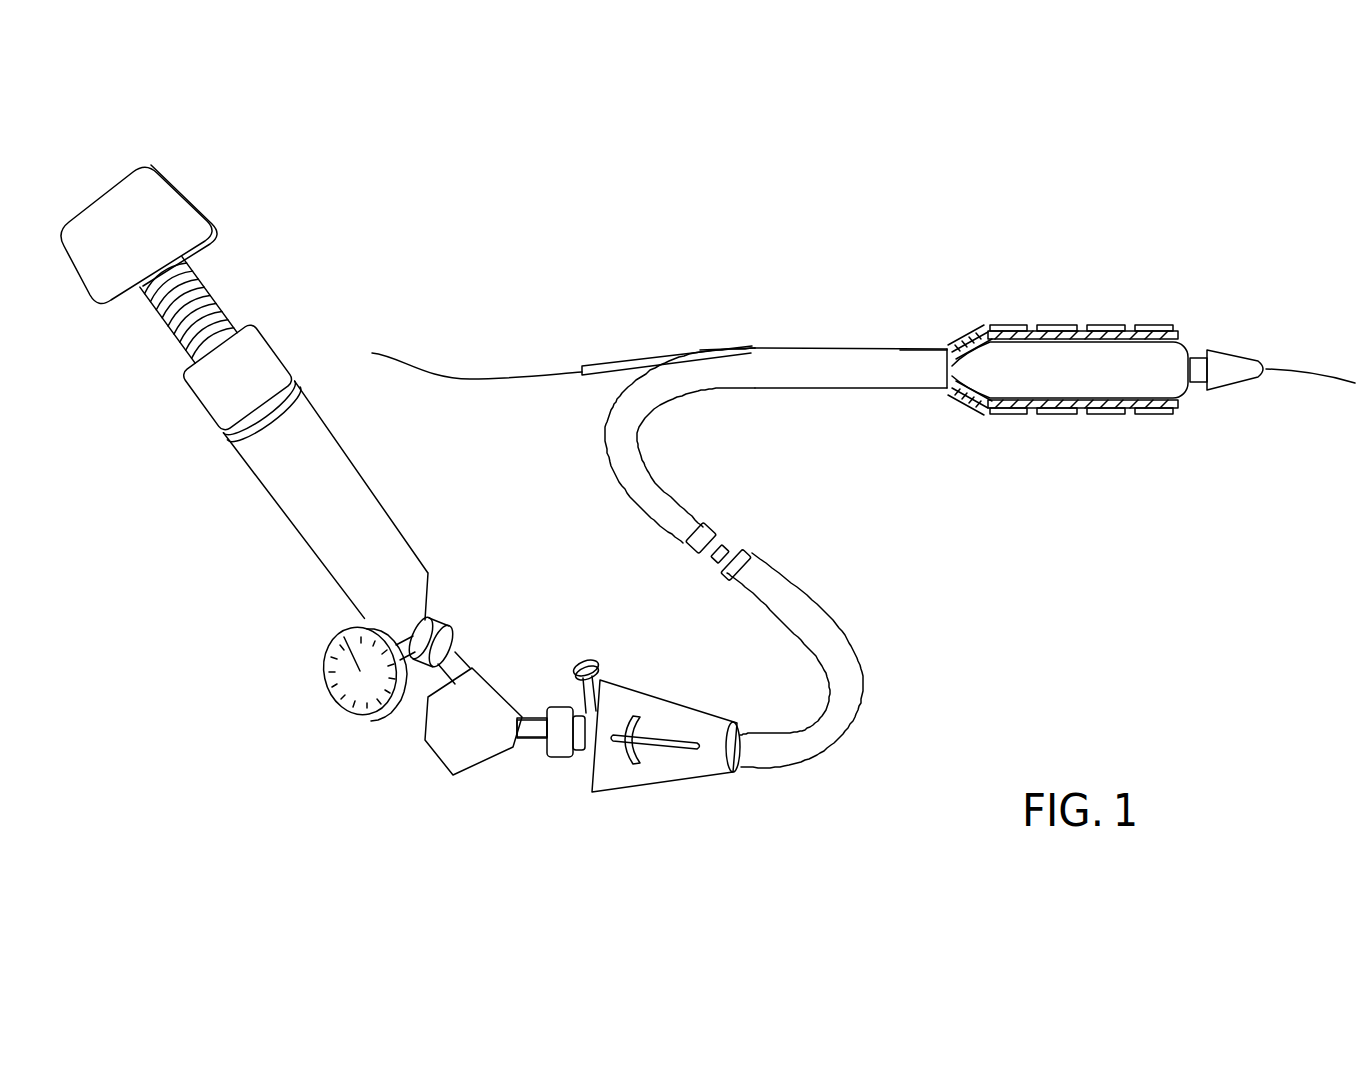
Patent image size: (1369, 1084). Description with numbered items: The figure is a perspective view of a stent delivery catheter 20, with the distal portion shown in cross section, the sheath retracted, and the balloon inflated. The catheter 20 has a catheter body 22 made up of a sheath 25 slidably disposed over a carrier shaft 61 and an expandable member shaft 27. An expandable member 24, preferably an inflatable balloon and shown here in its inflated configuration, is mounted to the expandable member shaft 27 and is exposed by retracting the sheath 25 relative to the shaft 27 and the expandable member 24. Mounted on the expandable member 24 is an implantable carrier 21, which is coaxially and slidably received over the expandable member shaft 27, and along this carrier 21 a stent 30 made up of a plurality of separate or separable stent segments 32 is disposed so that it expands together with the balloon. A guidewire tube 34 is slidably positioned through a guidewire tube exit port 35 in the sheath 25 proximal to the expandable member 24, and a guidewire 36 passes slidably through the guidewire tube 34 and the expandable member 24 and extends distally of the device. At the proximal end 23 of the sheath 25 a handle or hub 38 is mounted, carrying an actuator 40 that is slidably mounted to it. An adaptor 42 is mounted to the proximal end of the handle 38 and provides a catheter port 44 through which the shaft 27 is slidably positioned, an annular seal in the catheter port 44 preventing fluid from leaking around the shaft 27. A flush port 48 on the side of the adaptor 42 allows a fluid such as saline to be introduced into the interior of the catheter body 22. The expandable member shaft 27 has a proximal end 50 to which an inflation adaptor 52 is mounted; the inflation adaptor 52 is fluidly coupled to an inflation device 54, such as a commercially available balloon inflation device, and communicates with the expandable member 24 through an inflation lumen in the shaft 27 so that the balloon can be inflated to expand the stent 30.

The stent delivery catheter 20 is at (838, 248).
The implantable carrier 21 is at (1034, 414).
The catheter body 22 is at (750, 390).
The proximal end 23 is at (757, 737).
The expandable member 24 is at (988, 336).
The sheath 25 is at (920, 375).
The expandable member shaft 27 is at (528, 717).
The stent 30 is at (1085, 320).
The stent segments 32 is at (1140, 418).
The guidewire tube 34 is at (620, 365).
The guidewire tube exit port 35 is at (755, 348).
The guidewire 36 is at (465, 373).
The handle 38 is at (683, 768).
The actuator 40 is at (622, 768).
The adaptor 42 is at (581, 760).
The catheter port 44 is at (550, 760).
The flush port 48 is at (598, 672).
The proximal end 50 is at (522, 716).
The inflation adaptor 52 is at (445, 622).
The inflation device 54 is at (308, 456).
The carrier shaft 61 is at (712, 527).